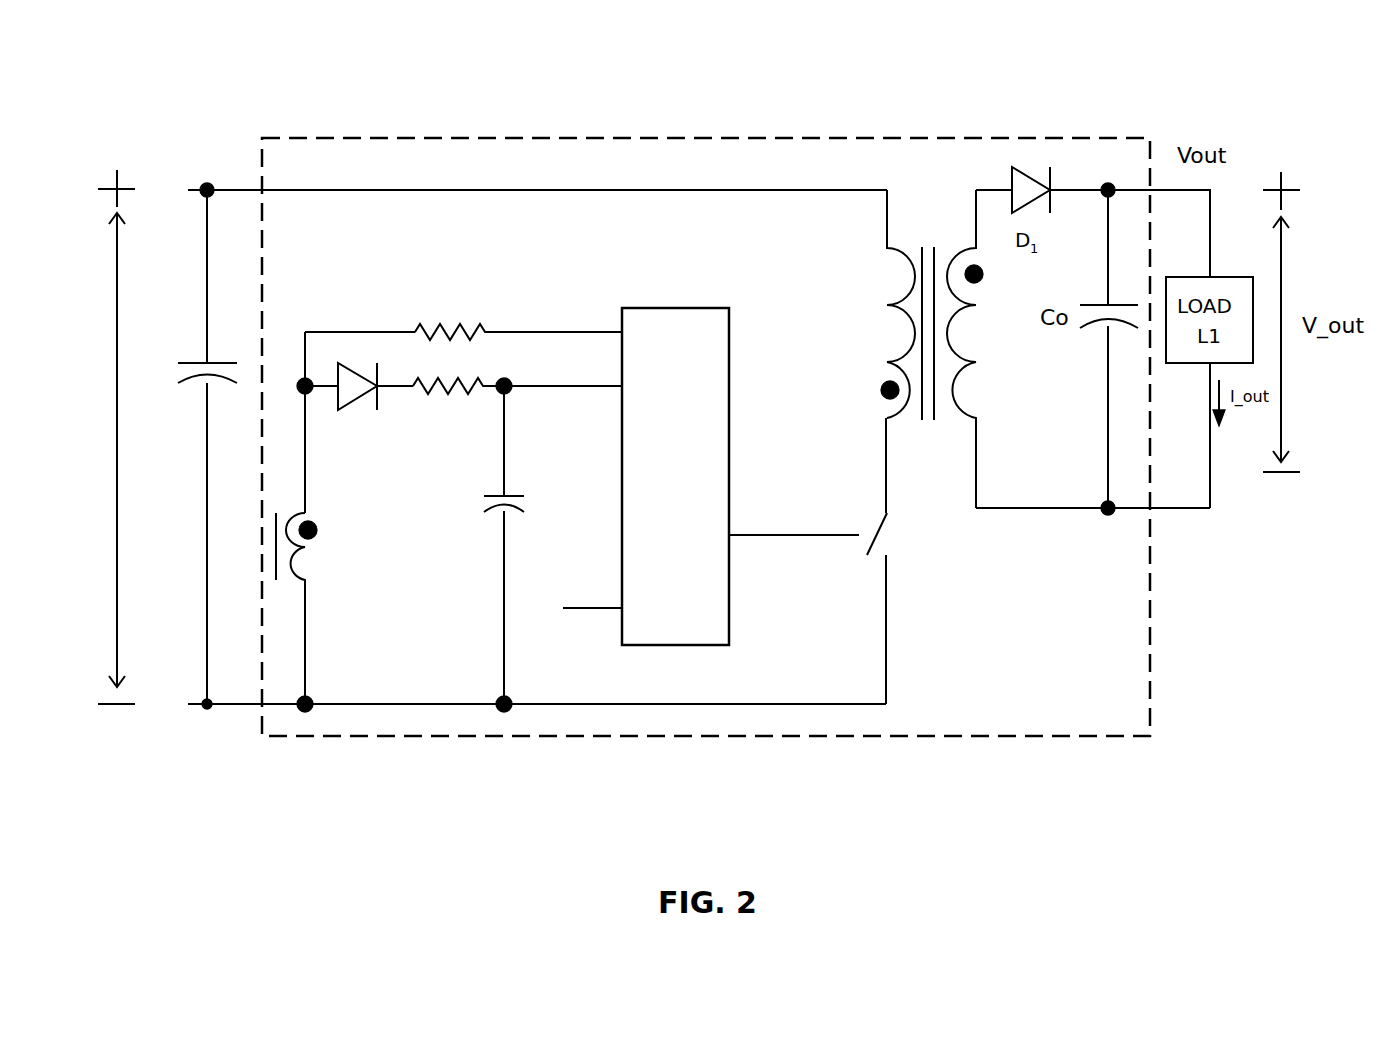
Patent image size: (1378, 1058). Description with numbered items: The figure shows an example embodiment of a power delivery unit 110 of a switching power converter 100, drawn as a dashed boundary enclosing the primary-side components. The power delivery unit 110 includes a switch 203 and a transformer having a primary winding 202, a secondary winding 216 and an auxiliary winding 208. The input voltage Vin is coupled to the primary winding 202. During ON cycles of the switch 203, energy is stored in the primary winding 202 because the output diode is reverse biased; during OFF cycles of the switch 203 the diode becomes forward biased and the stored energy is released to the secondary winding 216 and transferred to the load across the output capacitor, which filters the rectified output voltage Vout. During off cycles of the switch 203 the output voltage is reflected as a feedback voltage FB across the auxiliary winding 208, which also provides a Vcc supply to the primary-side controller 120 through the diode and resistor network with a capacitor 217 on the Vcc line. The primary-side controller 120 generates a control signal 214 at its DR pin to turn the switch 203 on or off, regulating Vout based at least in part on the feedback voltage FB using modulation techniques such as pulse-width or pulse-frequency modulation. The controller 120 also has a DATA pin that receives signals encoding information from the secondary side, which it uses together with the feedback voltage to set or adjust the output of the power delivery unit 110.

The switching power converter 100 is at (259, 98).
The power delivery unit 110 is at (1090, 137).
The primary-side controller 120 is at (673, 307).
The primary winding 202 is at (885, 305).
The switch 203 is at (859, 561).
The auxiliary winding 208 is at (317, 608).
The control signal 214 is at (794, 525).
The secondary winding 216 is at (983, 349).
The capacitor 217 is at (479, 545).